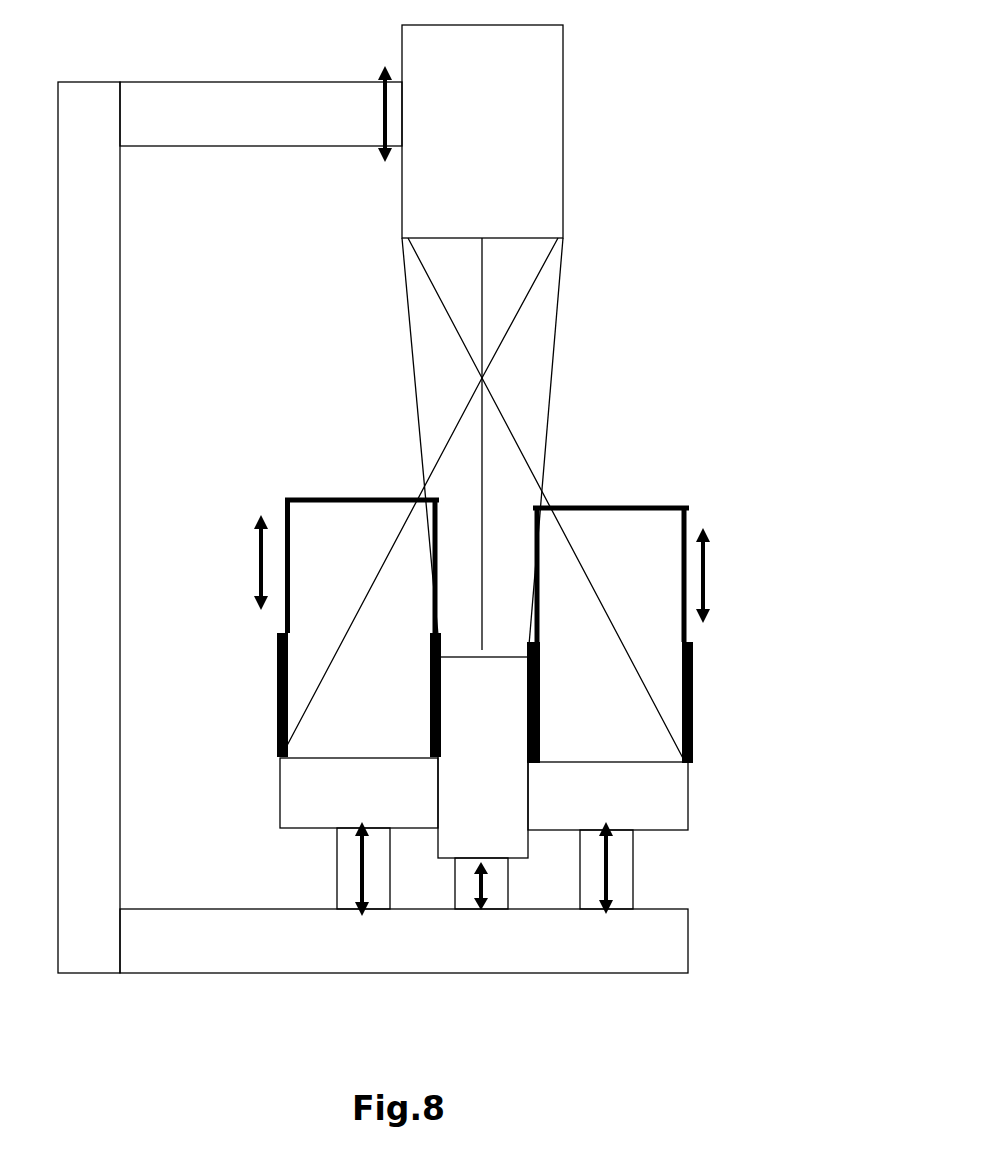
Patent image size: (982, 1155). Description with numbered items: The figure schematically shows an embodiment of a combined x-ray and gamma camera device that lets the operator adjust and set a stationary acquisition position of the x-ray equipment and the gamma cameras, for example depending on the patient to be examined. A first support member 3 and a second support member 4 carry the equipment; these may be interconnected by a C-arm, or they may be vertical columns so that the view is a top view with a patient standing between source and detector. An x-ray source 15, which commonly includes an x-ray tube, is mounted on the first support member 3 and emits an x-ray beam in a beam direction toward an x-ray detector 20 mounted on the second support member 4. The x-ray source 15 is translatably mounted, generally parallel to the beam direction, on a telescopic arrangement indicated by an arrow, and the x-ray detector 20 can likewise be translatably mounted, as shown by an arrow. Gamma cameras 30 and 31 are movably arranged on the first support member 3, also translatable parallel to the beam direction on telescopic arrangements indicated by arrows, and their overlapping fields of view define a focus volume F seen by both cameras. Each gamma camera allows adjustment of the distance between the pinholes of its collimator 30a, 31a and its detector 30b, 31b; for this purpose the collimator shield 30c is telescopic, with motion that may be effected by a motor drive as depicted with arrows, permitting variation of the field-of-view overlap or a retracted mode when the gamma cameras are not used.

The first support member 3 is at (252, 958).
The second support member 4 is at (256, 118).
The x-ray detector 20 is at (535, 173).
The focus volume F is at (498, 295).
The x-ray source 15 is at (512, 837).
The gamma camera 31 is at (293, 660).
The collimator 31a is at (233, 503).
The detector 31b is at (287, 783).
The gamma camera 30 is at (682, 657).
The collimator 30a is at (732, 517).
The detector 30b is at (665, 808).
The collimator shield 30c is at (692, 657).